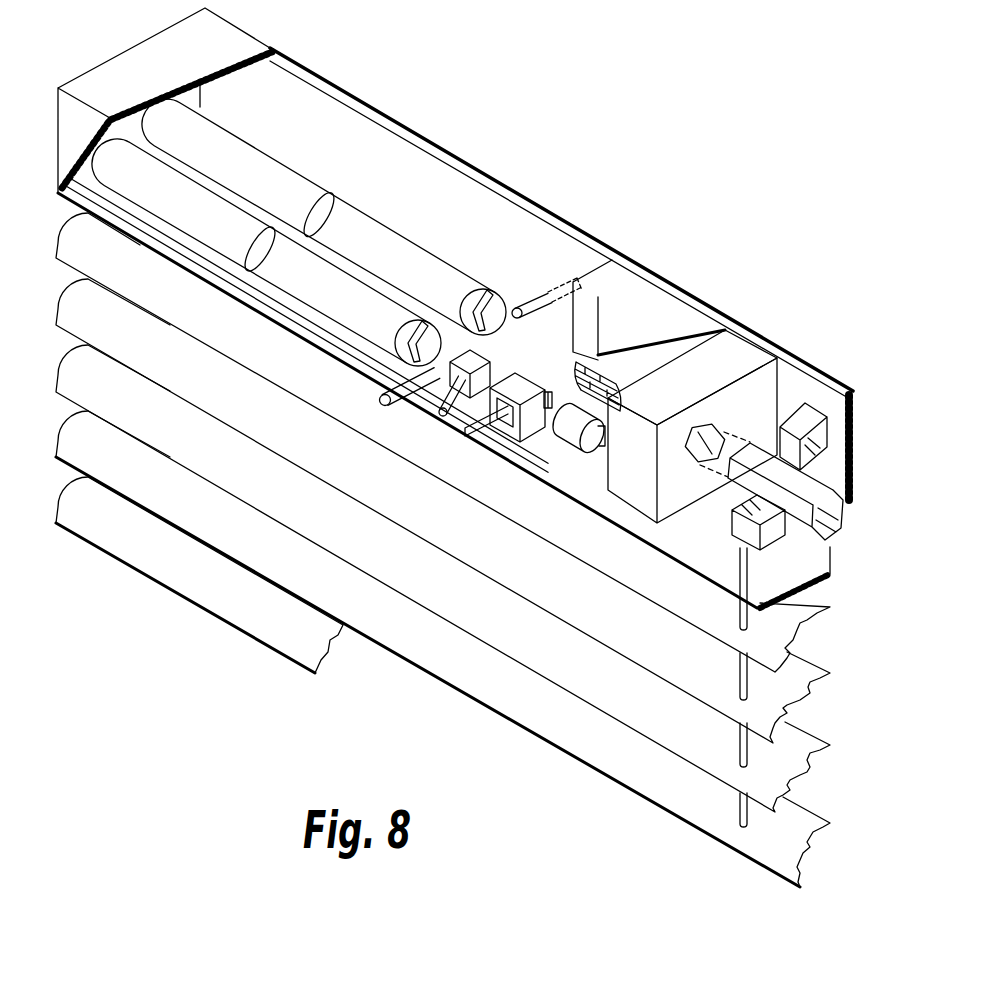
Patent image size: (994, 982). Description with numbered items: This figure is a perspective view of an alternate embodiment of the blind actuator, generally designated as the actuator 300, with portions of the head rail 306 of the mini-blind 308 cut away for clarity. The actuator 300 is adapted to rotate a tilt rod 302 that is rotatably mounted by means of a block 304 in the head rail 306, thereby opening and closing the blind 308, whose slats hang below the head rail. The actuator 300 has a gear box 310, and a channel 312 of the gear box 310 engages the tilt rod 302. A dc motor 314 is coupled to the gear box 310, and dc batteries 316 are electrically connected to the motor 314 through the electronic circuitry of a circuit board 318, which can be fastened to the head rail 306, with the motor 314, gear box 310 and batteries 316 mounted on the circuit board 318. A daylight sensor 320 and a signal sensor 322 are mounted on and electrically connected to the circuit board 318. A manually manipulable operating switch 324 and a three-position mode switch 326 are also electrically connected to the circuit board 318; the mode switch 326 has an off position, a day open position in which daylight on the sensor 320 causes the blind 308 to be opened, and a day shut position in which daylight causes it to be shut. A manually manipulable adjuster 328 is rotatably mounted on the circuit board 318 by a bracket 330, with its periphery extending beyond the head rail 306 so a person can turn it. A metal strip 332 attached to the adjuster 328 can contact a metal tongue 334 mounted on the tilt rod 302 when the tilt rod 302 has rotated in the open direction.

The actuator 300 is at (719, 198).
The tilt rod 302 is at (622, 378).
The block 304 is at (810, 417).
The head rail 306 is at (250, 40).
The mini-blind 308 is at (83, 252).
The gear box 310 is at (733, 347).
The channel 312 is at (740, 435).
The dc motor 314 is at (710, 335).
The dc batteries 316 is at (360, 213).
The circuit board 318 is at (150, 147).
The daylight sensor 320 is at (537, 300).
The signal sensor 322 is at (382, 400).
The operating switch 324 is at (450, 427).
The three-position mode switch 326 is at (527, 425).
The adjuster 328 is at (580, 450).
The bracket 330 is at (548, 408).
The metal strip 332 is at (566, 340).
The metal tongue 334 is at (590, 362).